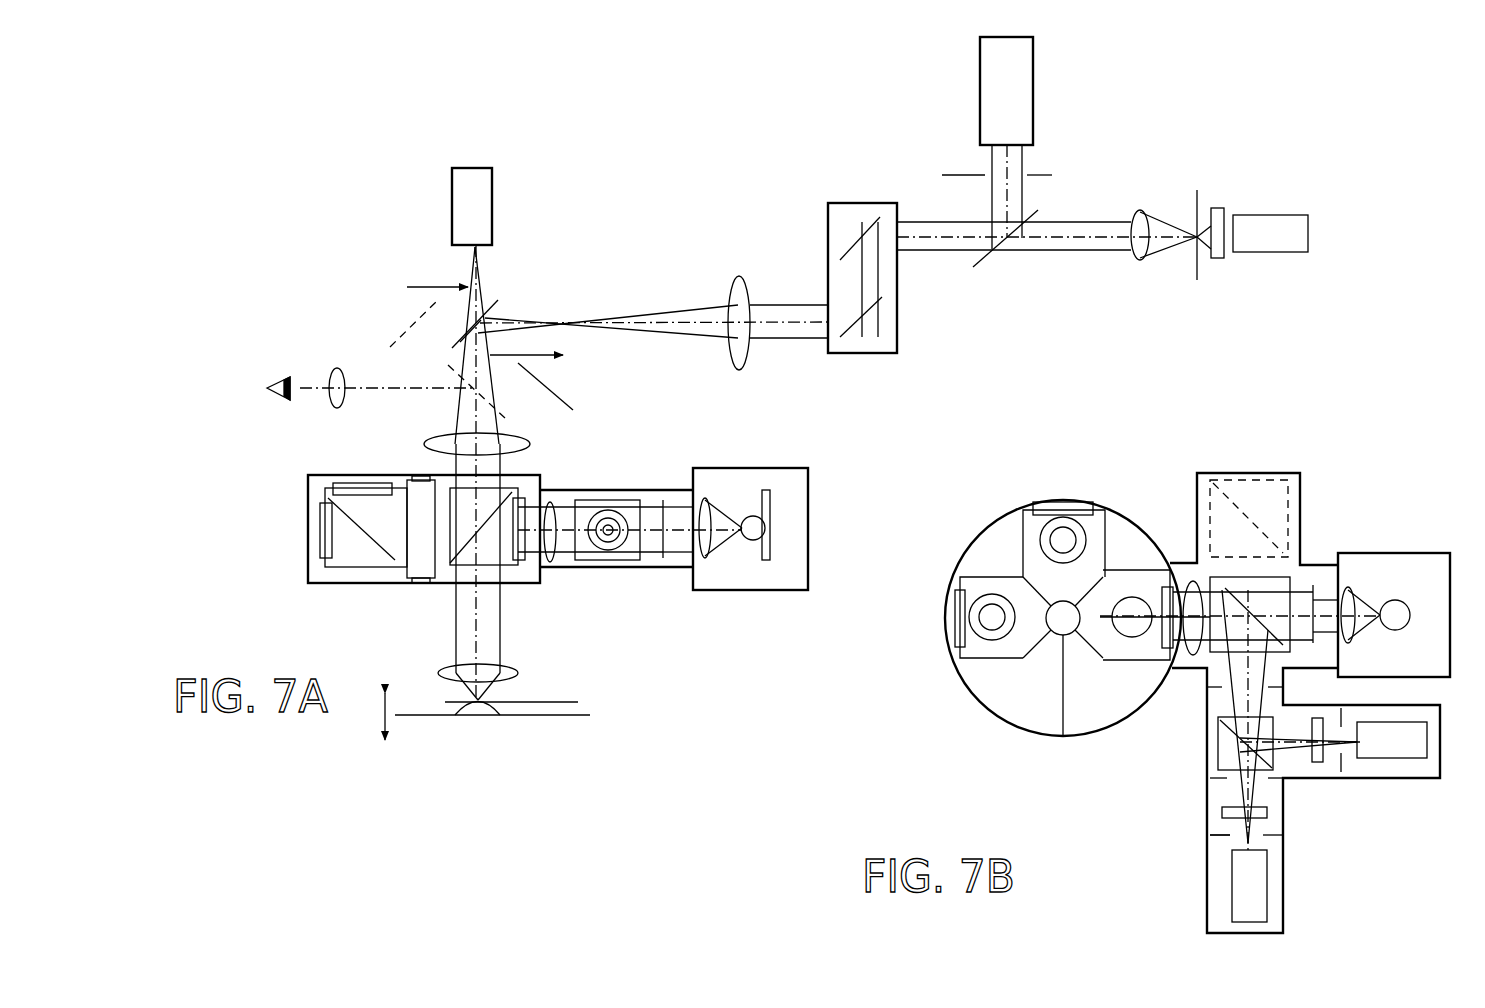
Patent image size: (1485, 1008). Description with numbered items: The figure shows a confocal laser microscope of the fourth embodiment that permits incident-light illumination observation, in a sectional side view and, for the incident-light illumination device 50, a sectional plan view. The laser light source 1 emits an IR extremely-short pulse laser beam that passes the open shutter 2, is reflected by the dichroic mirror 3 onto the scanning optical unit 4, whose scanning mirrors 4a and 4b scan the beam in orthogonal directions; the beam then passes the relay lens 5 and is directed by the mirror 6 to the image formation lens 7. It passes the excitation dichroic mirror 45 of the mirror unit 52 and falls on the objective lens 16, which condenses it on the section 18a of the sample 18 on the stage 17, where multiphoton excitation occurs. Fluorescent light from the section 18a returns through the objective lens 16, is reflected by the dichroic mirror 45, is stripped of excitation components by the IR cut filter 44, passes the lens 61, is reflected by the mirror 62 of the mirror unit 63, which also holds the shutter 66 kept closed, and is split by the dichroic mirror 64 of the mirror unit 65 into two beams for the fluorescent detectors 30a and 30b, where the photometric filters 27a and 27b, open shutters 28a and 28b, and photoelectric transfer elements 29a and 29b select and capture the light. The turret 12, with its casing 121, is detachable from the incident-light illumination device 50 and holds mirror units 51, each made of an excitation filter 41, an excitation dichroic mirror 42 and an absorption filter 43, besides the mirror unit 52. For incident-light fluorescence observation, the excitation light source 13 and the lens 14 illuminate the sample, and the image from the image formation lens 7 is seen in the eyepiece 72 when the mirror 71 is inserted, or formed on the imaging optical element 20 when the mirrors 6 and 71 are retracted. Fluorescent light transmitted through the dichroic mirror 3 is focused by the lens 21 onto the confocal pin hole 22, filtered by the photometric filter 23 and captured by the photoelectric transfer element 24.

In FIG. 7A, the laser light source 1 is at (1033, 100).
In FIG. 7A, the shutter 2 is at (975, 175).
In FIG. 7A, the dichroic mirror 3 is at (1038, 222).
In FIG. 7A, the scanning optical unit 4 is at (833, 203).
In FIG. 7A, the scanning mirror 4a is at (840, 256).
In FIG. 7A, the scanning mirror 4b is at (855, 340).
In FIG. 7A, the relay lens 5 is at (745, 290).
In FIG. 7A, the mirror 6 is at (495, 305).
In FIG. 7A, the image formation lens 7 is at (520, 440).
In FIG. 7A, the turret 12 is at (353, 472).
In FIG. 7B, the turret 12 is at (1001, 505).
In FIG. 7A, the excitation light source 13 is at (767, 515).
In FIG. 7B, the excitation light source 13 is at (1403, 628).
In FIG. 7A, the lens 14 is at (707, 560).
In FIG. 7B, the lens 14 is at (1355, 600).
In FIG. 7A, the objective lens 16 is at (515, 668).
In FIG. 7A, the stage 17 is at (415, 712).
In FIG. 7A, the sample 18 is at (465, 715).
In FIG. 7A, the section of the sample 18a is at (580, 702).
In FIG. 7A, the imaging optical element 20 is at (492, 207).
In FIG. 7A, the lens 21 is at (1140, 210).
In FIG. 7A, the confocal pin hole 22 is at (1200, 206).
In FIG. 7A, the photometric filter 23 is at (1218, 258).
In FIG. 7A, the photoelectric transfer element 24 is at (1257, 252).
In FIG. 7B, the photometric filter 27a is at (1222, 812).
In FIG. 7B, the photometric filter 27b is at (1320, 765).
In FIG. 7B, the shutter 28a is at (1222, 836).
In FIG. 7B, the shutter 28b is at (1341, 712).
In FIG. 7B, the photoelectric transfer element 29a is at (1262, 905).
In FIG. 7B, the photoelectric transfer element 29b is at (1400, 758).
In FIG. 7B, the fluorescent detector 30a is at (1290, 815).
In FIG. 7B, the fluorescent detector 30b is at (1312, 790).
In FIG. 7A, the excitation filter 41 is at (318, 540).
In FIG. 7B, the excitation filter 41 is at (1052, 500).
In FIG. 7A, the excitation dichroic mirror 42 is at (378, 560).
In FIG. 7B, the excitation dichroic mirror 42 is at (1080, 545).
In FIG. 7A, the absorption filter 43 is at (378, 483).
In FIG. 7B, the absorption filter 43 is at (1099, 502).
In FIG. 7A, the IR cut filter 44 is at (520, 560).
In FIG. 7B, the IR cut filter 44 is at (1167, 585).
In FIG. 7A, the excitation dichroic mirror 45 is at (452, 570).
In FIG. 7B, the excitation dichroic mirror 45 is at (1135, 598).
In FIG. 7A, the incident-light illumination device 50 is at (600, 570).
In FIG. 7B, the incident-light illumination device 50 is at (1310, 546).
In FIG. 7A, the mirror unit 51 is at (337, 570).
In FIG. 7B, the mirror unit 51 is at (1020, 546).
In FIG. 7A, the mirror unit 52 is at (512, 486).
In FIG. 7B, the mirror unit 52 is at (1128, 566).
In FIG. 7A, the lens 61 is at (553, 562).
In FIG. 7B, the lens 61 is at (1193, 655).
In FIG. 7B, the mirror 62 is at (1272, 636).
In FIG. 7A, the mirror unit 63 is at (612, 500).
In FIG. 7B, the mirror unit 63 is at (1292, 485).
In FIG. 7B, the dichroic mirror 64 is at (1218, 725).
In FIG. 7B, the mirror unit 65 is at (1218, 755).
In FIG. 7A, the shutter 66 is at (665, 500).
In FIG. 7B, the shutter 66 is at (1318, 640).
In FIG. 7A, the mirror 71 is at (558, 393).
In FIG. 7A, the eyepiece 72 is at (337, 368).
In FIG. 7A, the casing 121 is at (312, 478).
In FIG. 7B, the casing 121 is at (949, 553).